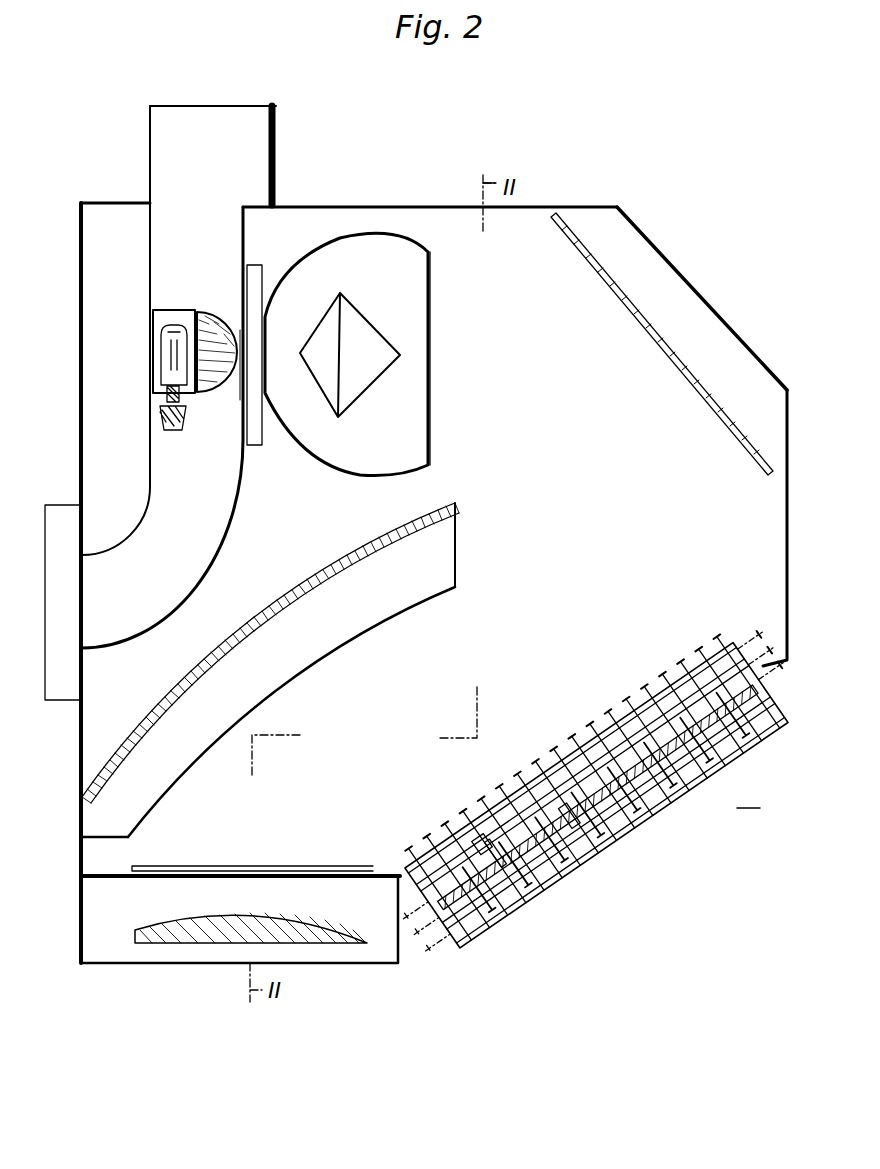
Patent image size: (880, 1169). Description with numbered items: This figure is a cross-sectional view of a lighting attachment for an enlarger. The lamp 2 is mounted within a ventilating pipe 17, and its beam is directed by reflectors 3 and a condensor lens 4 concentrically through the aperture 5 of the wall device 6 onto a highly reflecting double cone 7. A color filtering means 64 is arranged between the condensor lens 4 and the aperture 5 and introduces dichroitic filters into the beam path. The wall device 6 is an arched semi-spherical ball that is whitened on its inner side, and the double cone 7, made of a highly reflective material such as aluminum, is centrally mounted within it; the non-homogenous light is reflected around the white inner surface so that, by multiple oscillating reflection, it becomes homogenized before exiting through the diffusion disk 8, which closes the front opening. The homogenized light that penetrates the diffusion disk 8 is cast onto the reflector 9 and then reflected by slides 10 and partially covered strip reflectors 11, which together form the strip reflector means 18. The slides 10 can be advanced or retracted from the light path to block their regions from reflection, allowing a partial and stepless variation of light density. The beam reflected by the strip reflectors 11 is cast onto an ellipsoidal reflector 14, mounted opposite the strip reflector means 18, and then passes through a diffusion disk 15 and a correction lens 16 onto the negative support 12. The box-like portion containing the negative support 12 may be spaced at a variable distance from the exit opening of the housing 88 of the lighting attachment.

The lamp 2 is at (175, 330).
The reflectors 3 is at (160, 310).
The condensor lens 4 is at (220, 320).
The aperture 5 is at (253, 383).
The wall device 6 is at (327, 460).
The reflecting double cone 7 is at (340, 293).
The diffusion disk 8 is at (435, 313).
The reflector 9 is at (645, 325).
The slides 10 is at (680, 663).
The strip reflectors 11 is at (677, 670).
The negative support 12 is at (200, 963).
The ellipsoidal reflector 14 is at (278, 603).
The diffusion disk 15 is at (330, 866).
The correction lens 16 is at (175, 933).
The ventilating pipe 17 is at (260, 163).
The strip reflector means 18 is at (750, 796).
The color filtering means 64 is at (255, 427).
The housing 88 is at (663, 260).